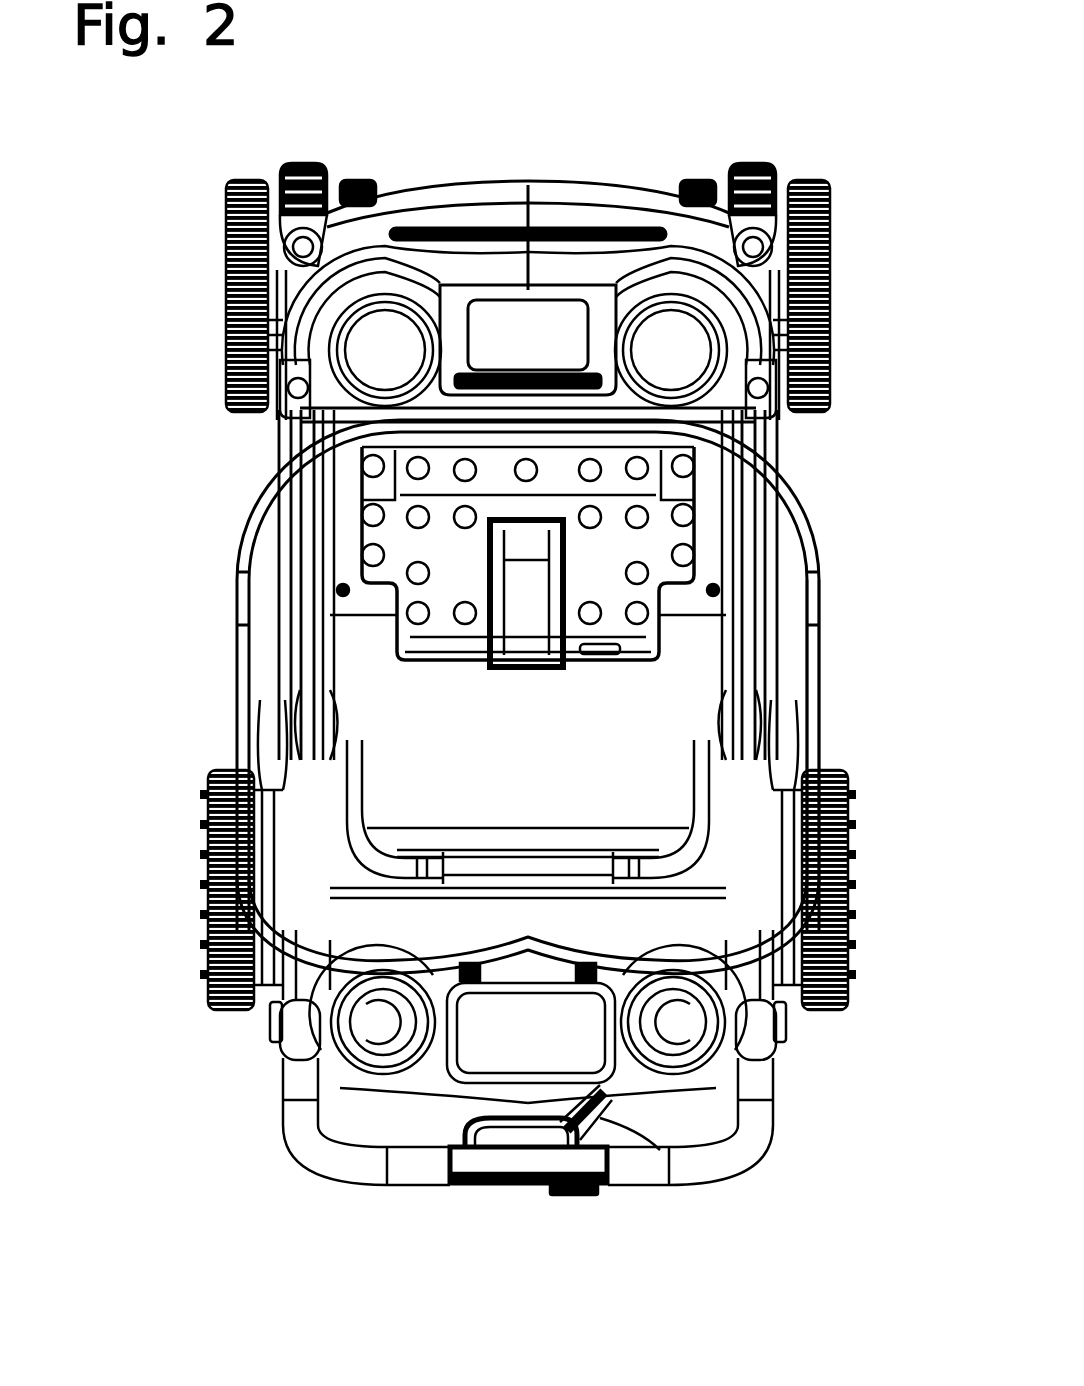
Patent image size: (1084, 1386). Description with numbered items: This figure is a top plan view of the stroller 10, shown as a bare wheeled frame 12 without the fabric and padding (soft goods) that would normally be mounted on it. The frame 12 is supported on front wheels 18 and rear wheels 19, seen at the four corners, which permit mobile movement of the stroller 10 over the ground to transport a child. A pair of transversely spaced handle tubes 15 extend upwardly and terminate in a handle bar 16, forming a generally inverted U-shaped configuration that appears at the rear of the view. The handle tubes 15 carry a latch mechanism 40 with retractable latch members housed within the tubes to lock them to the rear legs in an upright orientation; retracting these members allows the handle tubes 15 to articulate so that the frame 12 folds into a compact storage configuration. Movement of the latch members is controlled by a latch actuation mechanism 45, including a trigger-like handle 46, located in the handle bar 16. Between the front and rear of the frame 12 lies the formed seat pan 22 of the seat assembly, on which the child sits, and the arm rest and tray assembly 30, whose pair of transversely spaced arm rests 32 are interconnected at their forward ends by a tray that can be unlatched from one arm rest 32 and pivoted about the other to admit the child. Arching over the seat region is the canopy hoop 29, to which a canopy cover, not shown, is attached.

The stroller 10 is at (716, 124).
The wheeled frame 12 is at (230, 488).
The handle tubes 15 is at (292, 1048).
The handle bar 16 is at (418, 1175).
The front wheels 18 is at (822, 182).
The rear wheels 19 is at (250, 805).
The seat pan 22 is at (608, 627).
The canopy hoop 29 is at (816, 625).
The arm rest and tray assembly 30 is at (683, 355).
The arm rests 32 is at (293, 583).
The latch mechanism 40 is at (488, 1210).
The latch actuation mechanism 45 is at (542, 1206).
The trigger-like handle 46 is at (608, 1122).